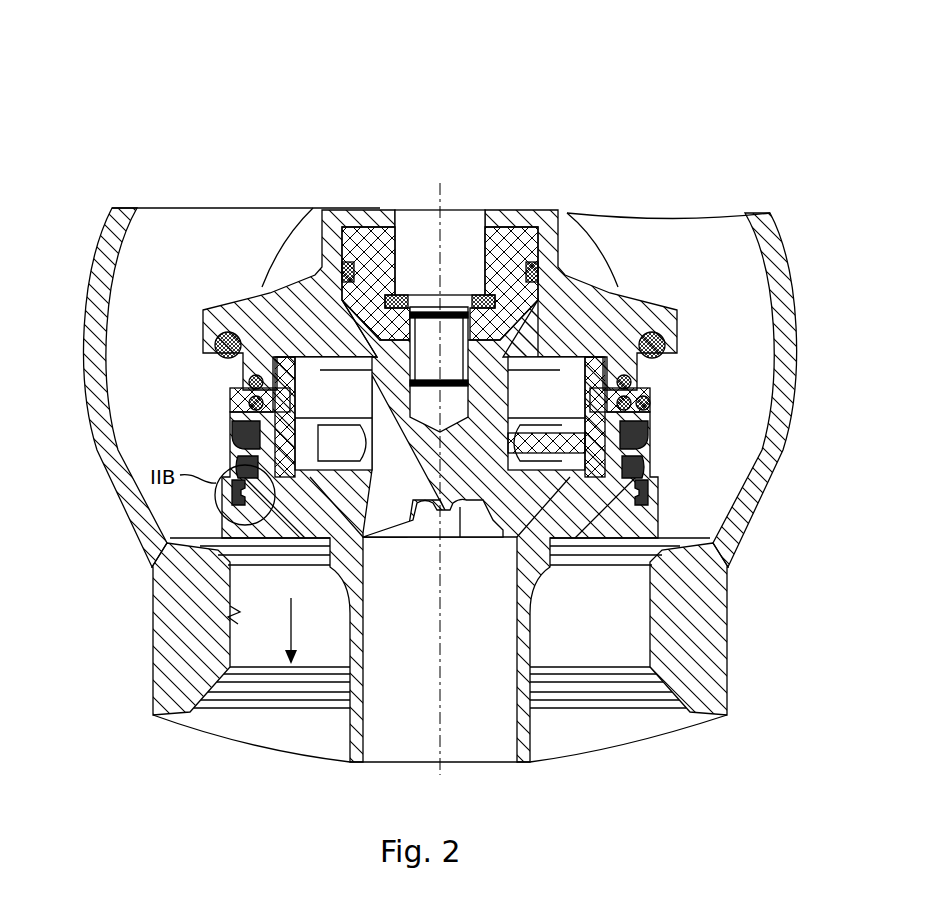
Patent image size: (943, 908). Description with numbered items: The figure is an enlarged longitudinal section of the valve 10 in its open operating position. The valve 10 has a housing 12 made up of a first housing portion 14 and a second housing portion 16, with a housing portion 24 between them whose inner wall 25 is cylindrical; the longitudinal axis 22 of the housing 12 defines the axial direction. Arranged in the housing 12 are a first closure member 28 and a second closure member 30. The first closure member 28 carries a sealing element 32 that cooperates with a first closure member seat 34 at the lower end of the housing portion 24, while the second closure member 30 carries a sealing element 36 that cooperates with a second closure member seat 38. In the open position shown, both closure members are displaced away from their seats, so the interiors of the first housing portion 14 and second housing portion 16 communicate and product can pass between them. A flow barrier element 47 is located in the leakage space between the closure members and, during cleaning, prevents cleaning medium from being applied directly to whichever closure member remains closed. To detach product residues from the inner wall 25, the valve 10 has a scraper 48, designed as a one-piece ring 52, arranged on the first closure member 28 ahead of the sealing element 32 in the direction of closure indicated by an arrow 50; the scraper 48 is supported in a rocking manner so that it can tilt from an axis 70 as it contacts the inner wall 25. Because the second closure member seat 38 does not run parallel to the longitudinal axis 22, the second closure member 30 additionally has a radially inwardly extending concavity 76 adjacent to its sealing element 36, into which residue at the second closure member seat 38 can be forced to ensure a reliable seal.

The valve 10 is at (603, 138).
The housing 12 is at (808, 283).
The first housing portion 14 is at (97, 380).
The second housing portion 16 is at (165, 724).
The longitudinal axis 22 is at (442, 192).
The housing portion 24 is at (180, 645).
The inner wall 25 is at (230, 608).
The first closure member 28 is at (287, 507).
The second closure member 30 is at (270, 300).
The sealing element 32 is at (232, 440).
The first closure member seat 34 is at (228, 655).
The sealing element 36 is at (215, 345).
The second closure member seat 38 is at (655, 554).
The flow barrier element 47 is at (602, 400).
The scraper 48 is at (222, 497).
The arrow 50 is at (291, 632).
The one-piece ring 52 is at (645, 505).
The axis 70 is at (232, 550).
The concavity 76 is at (232, 388).